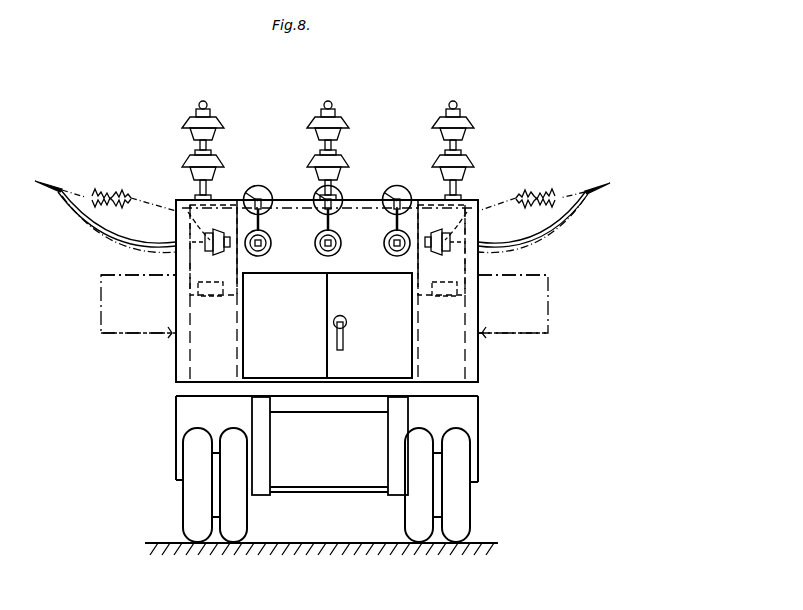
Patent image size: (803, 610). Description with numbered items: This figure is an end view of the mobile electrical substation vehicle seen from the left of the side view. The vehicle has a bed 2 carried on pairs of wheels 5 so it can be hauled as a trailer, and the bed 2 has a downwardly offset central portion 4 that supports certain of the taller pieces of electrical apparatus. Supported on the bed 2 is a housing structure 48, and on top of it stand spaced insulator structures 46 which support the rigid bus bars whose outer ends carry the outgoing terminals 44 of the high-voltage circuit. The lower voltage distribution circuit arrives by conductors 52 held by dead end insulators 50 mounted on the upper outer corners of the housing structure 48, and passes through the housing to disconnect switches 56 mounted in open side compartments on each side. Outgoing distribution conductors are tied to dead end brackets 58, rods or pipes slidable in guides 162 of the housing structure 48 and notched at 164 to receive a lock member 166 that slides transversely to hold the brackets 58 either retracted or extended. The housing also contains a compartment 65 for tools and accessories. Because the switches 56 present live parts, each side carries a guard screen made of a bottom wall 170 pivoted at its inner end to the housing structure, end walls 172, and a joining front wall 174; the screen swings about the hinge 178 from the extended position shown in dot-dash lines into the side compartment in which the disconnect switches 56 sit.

The bed 2 is at (180, 388).
The downwardly offset central portion 4 is at (180, 449).
The wheels 5 is at (321, 559).
The outgoing terminals 44 is at (206, 108).
The insulator structures 46 is at (215, 135).
The housing structure 48 is at (280, 199).
The dead end insulators 50 is at (259, 188).
The conductors 52 is at (250, 196).
The disconnect switches 56 is at (190, 259).
The dead end brackets 58 is at (181, 200).
The compartment 65 is at (303, 323).
The guides 162 is at (262, 222).
The notches 164 is at (196, 205).
The lock member 166 is at (177, 215).
The bottom wall 170 is at (115, 334).
The end walls 172 is at (115, 310).
The front wall 174 is at (100, 295).
The hinge 178 is at (172, 333).